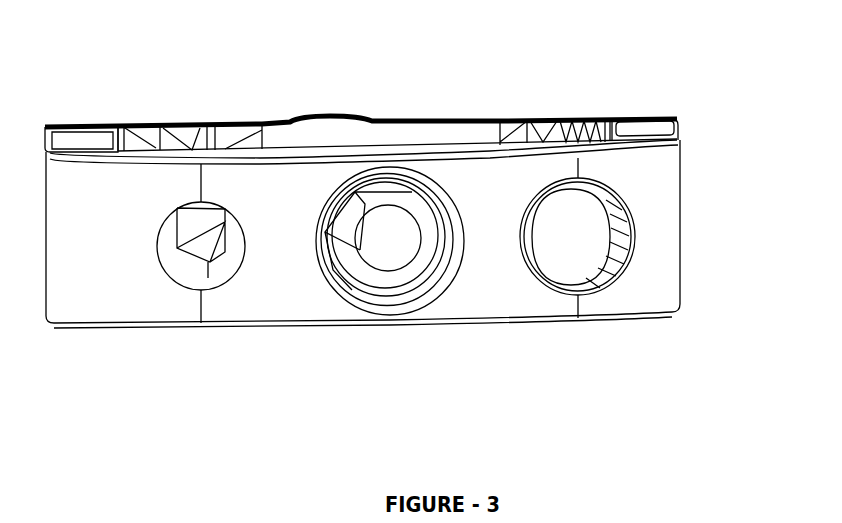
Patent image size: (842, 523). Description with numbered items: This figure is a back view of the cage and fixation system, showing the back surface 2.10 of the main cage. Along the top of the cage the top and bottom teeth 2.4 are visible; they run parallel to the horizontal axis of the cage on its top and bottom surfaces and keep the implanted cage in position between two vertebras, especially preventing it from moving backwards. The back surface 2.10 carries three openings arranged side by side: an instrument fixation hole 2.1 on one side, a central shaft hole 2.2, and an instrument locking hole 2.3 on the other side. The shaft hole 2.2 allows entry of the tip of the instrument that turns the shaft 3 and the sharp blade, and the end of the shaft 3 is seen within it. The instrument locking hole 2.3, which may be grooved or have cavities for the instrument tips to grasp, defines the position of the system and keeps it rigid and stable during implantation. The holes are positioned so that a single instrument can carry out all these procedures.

The back surface 2.10 is at (663, 178).
The top and bottom teeth 2.4 is at (95, 124).
The instrument fixation hole 2.1 is at (212, 280).
The shaft hole 2.2 is at (433, 272).
The shaft 3 is at (380, 242).
The instrument locking hole 2.3 is at (608, 263).